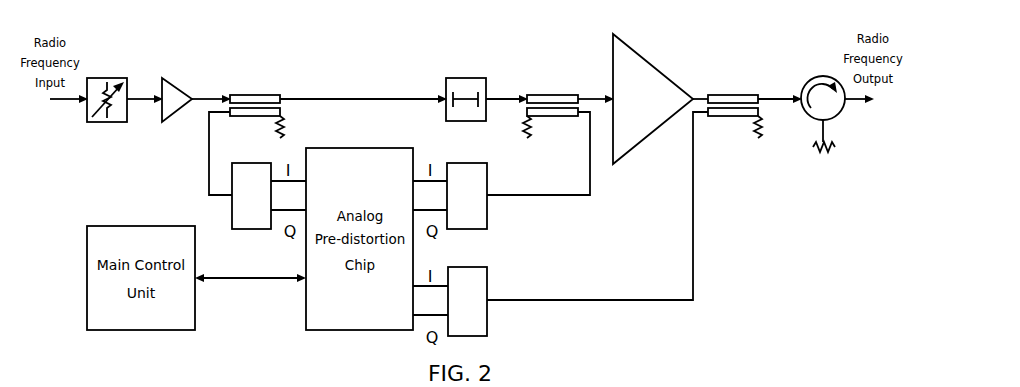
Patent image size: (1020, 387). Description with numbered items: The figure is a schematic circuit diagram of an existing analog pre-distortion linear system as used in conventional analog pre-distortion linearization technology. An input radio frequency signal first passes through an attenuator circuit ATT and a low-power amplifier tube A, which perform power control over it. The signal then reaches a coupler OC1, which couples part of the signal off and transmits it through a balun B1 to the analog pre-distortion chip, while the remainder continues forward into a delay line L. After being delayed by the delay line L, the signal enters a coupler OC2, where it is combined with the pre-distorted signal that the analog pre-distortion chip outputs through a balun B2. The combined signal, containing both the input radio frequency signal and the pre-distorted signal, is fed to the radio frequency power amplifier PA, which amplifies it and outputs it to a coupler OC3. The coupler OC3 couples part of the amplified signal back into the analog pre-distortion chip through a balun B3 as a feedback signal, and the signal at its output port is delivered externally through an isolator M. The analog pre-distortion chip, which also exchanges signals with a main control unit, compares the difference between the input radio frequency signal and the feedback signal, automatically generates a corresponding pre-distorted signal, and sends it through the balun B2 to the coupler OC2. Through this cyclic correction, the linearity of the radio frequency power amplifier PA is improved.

The attenuator circuit ATT is at (107, 86).
The low-power amplifier tube A is at (177, 86).
The coupler OC1 is at (257, 104).
The delay line L is at (466, 82).
The coupler OC2 is at (550, 104).
The radio frequency power amplifier PA is at (653, 92).
The coupler OC3 is at (735, 104).
The isolator M is at (823, 99).
The balun B1 is at (269, 185).
The balun B2 is at (450, 185).
The balun B3 is at (450, 291).